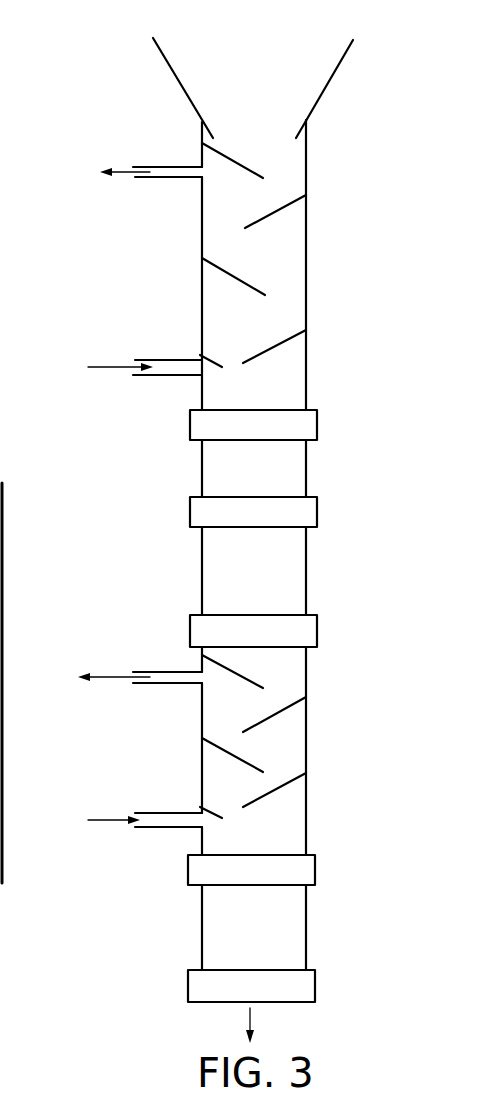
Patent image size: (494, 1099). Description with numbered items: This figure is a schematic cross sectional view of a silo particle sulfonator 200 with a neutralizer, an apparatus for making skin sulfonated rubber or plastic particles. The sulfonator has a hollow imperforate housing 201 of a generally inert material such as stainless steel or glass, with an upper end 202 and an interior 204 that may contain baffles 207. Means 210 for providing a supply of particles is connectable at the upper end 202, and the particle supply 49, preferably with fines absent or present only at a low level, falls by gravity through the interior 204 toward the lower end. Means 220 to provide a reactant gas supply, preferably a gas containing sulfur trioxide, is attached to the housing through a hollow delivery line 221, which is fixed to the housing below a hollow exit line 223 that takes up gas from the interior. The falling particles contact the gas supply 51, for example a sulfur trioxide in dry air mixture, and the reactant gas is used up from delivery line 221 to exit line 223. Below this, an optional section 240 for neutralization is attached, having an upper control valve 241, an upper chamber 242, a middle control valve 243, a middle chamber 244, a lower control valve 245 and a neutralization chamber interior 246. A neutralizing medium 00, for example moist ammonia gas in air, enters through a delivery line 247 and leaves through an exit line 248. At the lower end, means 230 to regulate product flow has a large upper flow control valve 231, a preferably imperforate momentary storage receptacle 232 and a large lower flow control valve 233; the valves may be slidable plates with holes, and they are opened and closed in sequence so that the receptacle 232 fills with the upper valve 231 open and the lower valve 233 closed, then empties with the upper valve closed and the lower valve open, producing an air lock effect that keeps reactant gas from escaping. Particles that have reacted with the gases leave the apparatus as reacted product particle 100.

The silo particle sulfonator 200 is at (110, 62).
The means for providing a supply of particles 210 is at (175, 80).
The particle supply 49 is at (260, 134).
The upper end 202 is at (200, 136).
The hollow imperforate housing 201 is at (220, 245).
The hollow exit line 223 is at (162, 177).
The interior 204 is at (200, 258).
The baffles 207 is at (233, 283).
The hollow delivery line 221 is at (148, 360).
The gas supply 51 is at (110, 368).
The means to provide a reactant gas supply 220 is at (26, 658).
The upper control valve 241 is at (190, 418).
The upper chamber 242 is at (218, 462).
The middle control valve 243 is at (190, 517).
The middle chamber 244 is at (215, 568).
The lower control valve 245 is at (190, 630).
The exit line 248 is at (165, 672).
The section for neutralization 240 is at (200, 730).
The neutralization chamber interior 246 is at (213, 702).
The delivery line 247 is at (162, 813).
The neutralizing medium 00 is at (115, 822).
The upper flow control valve 231 is at (188, 863).
The means to regulate product flow 230 is at (200, 918).
The momentary storage receptacle 232 is at (212, 947).
The lower flow control valve 233 is at (195, 987).
The reacted product particle 100 is at (245, 1030).